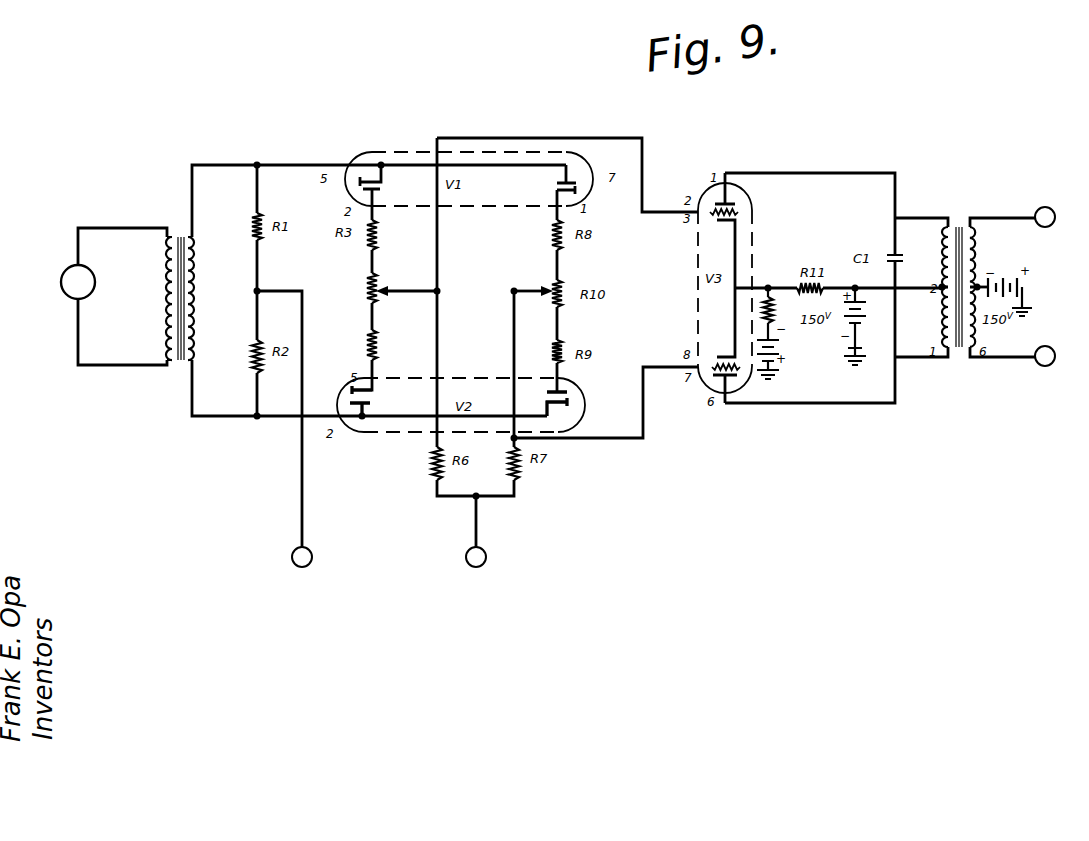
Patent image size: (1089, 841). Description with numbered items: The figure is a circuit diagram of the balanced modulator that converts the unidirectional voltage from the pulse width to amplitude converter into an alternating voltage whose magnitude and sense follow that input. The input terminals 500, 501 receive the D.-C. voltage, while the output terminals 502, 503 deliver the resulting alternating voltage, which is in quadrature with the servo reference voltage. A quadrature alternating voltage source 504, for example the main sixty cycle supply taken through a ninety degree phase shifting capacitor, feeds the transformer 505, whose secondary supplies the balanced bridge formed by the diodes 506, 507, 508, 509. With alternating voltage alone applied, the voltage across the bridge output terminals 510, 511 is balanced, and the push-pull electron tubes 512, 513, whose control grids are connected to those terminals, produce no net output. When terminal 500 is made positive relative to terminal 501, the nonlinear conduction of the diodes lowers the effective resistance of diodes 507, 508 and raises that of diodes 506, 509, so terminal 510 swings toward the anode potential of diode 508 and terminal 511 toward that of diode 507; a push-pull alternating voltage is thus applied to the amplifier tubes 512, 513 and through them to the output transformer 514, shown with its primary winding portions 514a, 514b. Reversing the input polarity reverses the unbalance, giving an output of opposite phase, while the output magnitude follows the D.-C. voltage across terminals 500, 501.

The input terminal 500 is at (311, 563).
The input terminal 501 is at (483, 565).
The output terminal 502 is at (1052, 225).
The output terminal 503 is at (1055, 347).
The quadrature alternating voltage source 504 is at (90, 293).
The transformer 505 is at (186, 394).
The diode 506 is at (341, 192).
The diode 507 is at (600, 151).
The diode 508 is at (348, 392).
The diode 509 is at (592, 384).
The output terminal of bridge 510 is at (425, 285).
The output terminal of bridge 511 is at (522, 283).
The electron tube 512 is at (755, 187).
The electron tube 513 is at (701, 382).
The transformer 514 is at (939, 296).
The upper primary half of transformer T2 514a is at (942, 268).
The lower primary half of transformer T2 514b is at (941, 319).